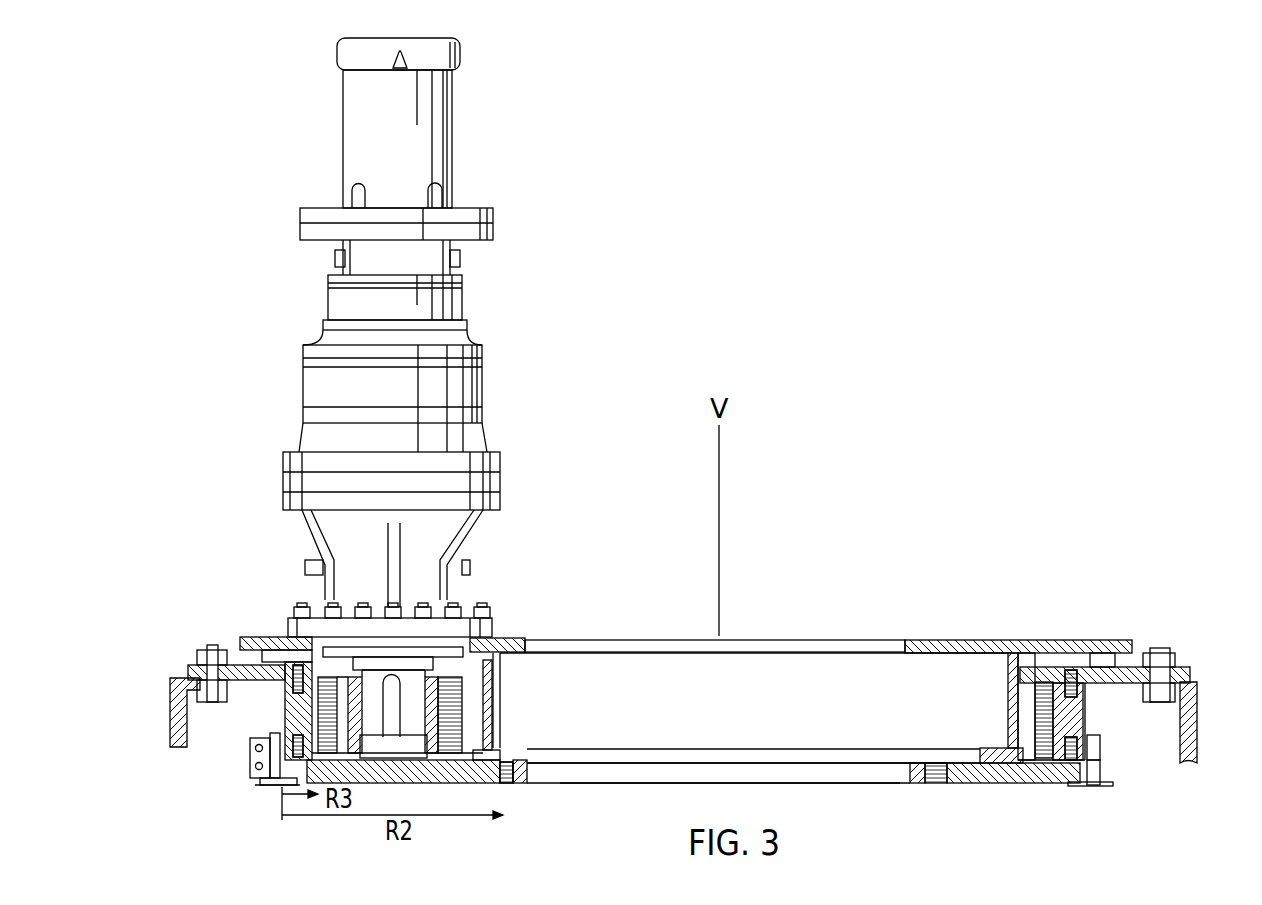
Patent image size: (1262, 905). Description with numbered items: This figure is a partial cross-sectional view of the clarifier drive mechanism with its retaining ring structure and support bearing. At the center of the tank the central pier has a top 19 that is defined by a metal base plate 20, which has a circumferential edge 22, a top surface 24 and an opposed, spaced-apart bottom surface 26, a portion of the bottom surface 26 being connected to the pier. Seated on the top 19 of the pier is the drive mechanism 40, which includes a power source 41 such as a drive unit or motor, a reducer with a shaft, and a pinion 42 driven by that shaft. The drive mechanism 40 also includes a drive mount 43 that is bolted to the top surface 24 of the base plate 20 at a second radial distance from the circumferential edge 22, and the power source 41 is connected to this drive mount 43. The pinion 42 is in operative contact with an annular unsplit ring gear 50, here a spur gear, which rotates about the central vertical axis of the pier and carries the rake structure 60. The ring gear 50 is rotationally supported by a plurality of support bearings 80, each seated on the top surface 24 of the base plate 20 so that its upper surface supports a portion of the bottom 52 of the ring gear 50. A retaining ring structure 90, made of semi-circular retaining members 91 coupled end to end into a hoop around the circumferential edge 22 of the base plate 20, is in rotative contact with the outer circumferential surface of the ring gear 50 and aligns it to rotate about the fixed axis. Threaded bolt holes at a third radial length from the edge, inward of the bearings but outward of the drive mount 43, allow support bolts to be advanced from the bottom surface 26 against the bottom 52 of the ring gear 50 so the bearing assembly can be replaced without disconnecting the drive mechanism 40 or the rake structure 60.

The top of the pier 19 is at (857, 778).
The base plate 20 is at (583, 775).
The circumferential edge 22 is at (270, 782).
The top surface 24 is at (707, 763).
The bottom surface 26 is at (657, 783).
The drive mechanism 40 is at (483, 381).
The power source 41 is at (425, 148).
The pinion 42 is at (450, 708).
The drive mount 43 is at (512, 638).
The ring gear 50 is at (1087, 710).
The bottom of the ring gear 52 is at (1040, 745).
The rake structure 60 is at (172, 710).
The support bearing 80 is at (255, 765).
The retaining ring structure 90 is at (250, 748).
The retaining member 91 is at (275, 740).